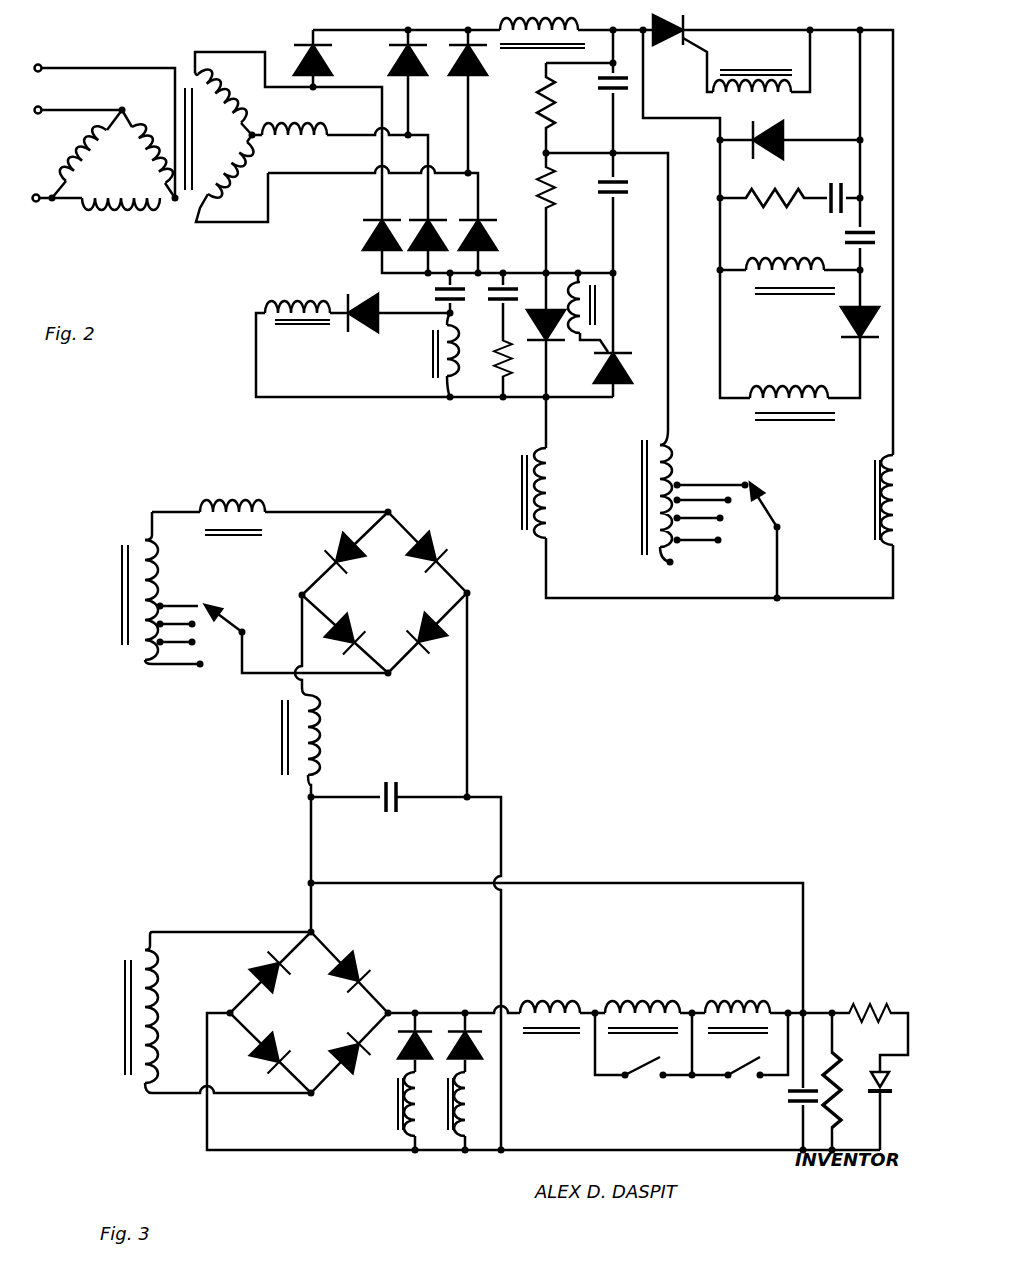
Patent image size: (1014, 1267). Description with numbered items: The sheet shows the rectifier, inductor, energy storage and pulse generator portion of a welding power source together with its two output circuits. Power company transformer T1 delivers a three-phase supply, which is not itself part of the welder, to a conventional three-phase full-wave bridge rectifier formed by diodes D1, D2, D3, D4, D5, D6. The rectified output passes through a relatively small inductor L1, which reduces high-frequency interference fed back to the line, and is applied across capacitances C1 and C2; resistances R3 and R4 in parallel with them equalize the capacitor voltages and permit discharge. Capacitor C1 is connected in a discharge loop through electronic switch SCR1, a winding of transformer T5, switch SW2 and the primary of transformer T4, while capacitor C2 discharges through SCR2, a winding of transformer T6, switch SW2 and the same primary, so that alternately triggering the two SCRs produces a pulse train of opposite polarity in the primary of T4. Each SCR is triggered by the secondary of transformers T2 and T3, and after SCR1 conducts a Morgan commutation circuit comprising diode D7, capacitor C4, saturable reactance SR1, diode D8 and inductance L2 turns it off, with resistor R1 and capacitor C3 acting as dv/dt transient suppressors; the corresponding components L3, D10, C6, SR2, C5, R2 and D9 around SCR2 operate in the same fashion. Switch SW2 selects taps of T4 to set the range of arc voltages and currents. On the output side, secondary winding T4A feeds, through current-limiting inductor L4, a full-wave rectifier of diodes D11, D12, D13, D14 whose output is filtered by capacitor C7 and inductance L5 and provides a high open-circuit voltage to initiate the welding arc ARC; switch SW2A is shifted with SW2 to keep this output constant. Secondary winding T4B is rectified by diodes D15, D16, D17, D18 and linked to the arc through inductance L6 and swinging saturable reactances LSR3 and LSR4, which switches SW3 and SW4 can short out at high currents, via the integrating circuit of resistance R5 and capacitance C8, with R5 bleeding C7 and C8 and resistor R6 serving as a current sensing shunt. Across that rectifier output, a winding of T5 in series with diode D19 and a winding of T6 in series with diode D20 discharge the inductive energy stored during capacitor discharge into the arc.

In FIG. 2, the transformer T1 is at (180, 122).
In FIG. 2, the diode D1 is at (301, 53).
In FIG. 2, the diode D2 is at (393, 58).
In FIG. 2, the diode D3 is at (457, 58).
In FIG. 2, the diode D4 is at (369, 224).
In FIG. 2, the diode D5 is at (420, 224).
In FIG. 2, the diode D6 is at (471, 224).
In FIG. 2, the inductor L1 is at (542, 46).
In FIG. 2, the resistance R3 is at (530, 102).
In FIG. 2, the resistance R4 is at (528, 187).
In FIG. 2, the capacitance C1 is at (601, 88).
In FIG. 2, the capacitance C2 is at (601, 199).
In FIG. 2, the electronic switch SCR1 is at (674, 40).
In FIG. 2, the transformer T2 is at (752, 68).
In FIG. 2, the diode D7 is at (768, 150).
In FIG. 2, the resistor R1 is at (775, 214).
In FIG. 2, the capacitor C3 is at (832, 185).
In FIG. 2, the capacitor C4 is at (867, 253).
In FIG. 2, the saturable reactance SR1 is at (790, 265).
In FIG. 2, the diode D8 is at (839, 325).
In FIG. 2, the inductance L2 is at (792, 393).
In FIG. 2, the inductor L3 is at (297, 295).
In FIG. 2, the diode D10 is at (359, 326).
In FIG. 2, the capacitor C6 is at (432, 290).
In FIG. 2, the saturable reactor SR2 is at (418, 358).
In FIG. 2, the capacitor C5 is at (498, 312).
In FIG. 2, the resistor R2 is at (492, 358).
In FIG. 2, the diode D9 is at (553, 339).
In FIG. 2, the transformer T3 is at (581, 290).
In FIG. 2, the electronic switch SCR2 is at (618, 387).
In FIG. 2, the transformer T6 is at (521, 483).
In FIG. 3, the transformer T6 is at (473, 1108).
In FIG. 2, the transformer T4 is at (680, 513).
In FIG. 2, the switch SW2 is at (739, 540).
In FIG. 2, the transformer T5 is at (862, 500).
In FIG. 3, the transformer T5 is at (391, 1107).
In FIG. 3, the secondary winding T4A is at (137, 590).
In FIG. 3, the inductor L4 is at (232, 531).
In FIG. 3, the switch SW2A is at (219, 653).
In FIG. 3, the diode D11 is at (331, 550).
In FIG. 3, the diode D12 is at (444, 551).
In FIG. 3, the diode D13 is at (336, 643).
In FIG. 3, the diode D14 is at (436, 643).
In FIG. 3, the inductance L5 is at (315, 735).
In FIG. 3, the capacitor C7 is at (395, 805).
In FIG. 3, the secondary winding T4B is at (112, 1016).
In FIG. 3, the diode D15 is at (367, 965).
In FIG. 3, the diode D16 is at (361, 1064).
In FIG. 3, the diode D17 is at (256, 1062).
In FIG. 3, the diode D18 is at (250, 970).
In FIG. 3, the diode D19 is at (397, 1045).
In FIG. 3, the diode D20 is at (479, 1044).
In FIG. 3, the inductance L6 is at (550, 1008).
In FIG. 3, the swinging saturable reactance LSR3 is at (642, 1008).
In FIG. 3, the swinging saturable reactance LSR4 is at (737, 1008).
In FIG. 3, the switch SW3 is at (645, 1060).
In FIG. 3, the switch SW4 is at (740, 1060).
In FIG. 3, the capacitance C8 is at (790, 1103).
In FIG. 3, the resistance R5 is at (843, 1090).
In FIG. 3, the resistor R6 is at (870, 1002).
In FIG. 3, the welding arc ARC is at (889, 1088).